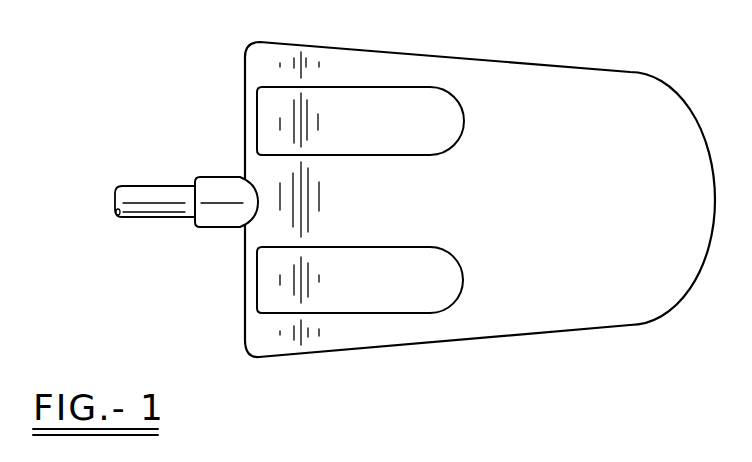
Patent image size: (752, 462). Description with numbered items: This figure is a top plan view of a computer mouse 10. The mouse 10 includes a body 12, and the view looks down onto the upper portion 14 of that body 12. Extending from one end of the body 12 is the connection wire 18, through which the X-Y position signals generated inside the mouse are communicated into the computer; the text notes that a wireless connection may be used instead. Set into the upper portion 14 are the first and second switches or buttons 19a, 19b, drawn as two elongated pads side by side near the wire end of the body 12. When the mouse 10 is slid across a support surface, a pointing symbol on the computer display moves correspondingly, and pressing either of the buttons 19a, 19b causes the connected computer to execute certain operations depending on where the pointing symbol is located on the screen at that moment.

The computer mouse 10 is at (226, 79).
The body 12 is at (554, 66).
The upper portion 14 is at (636, 212).
The connection wire 18 is at (146, 218).
The first switch or button 19a is at (450, 120).
The second switch or button 19b is at (450, 280).